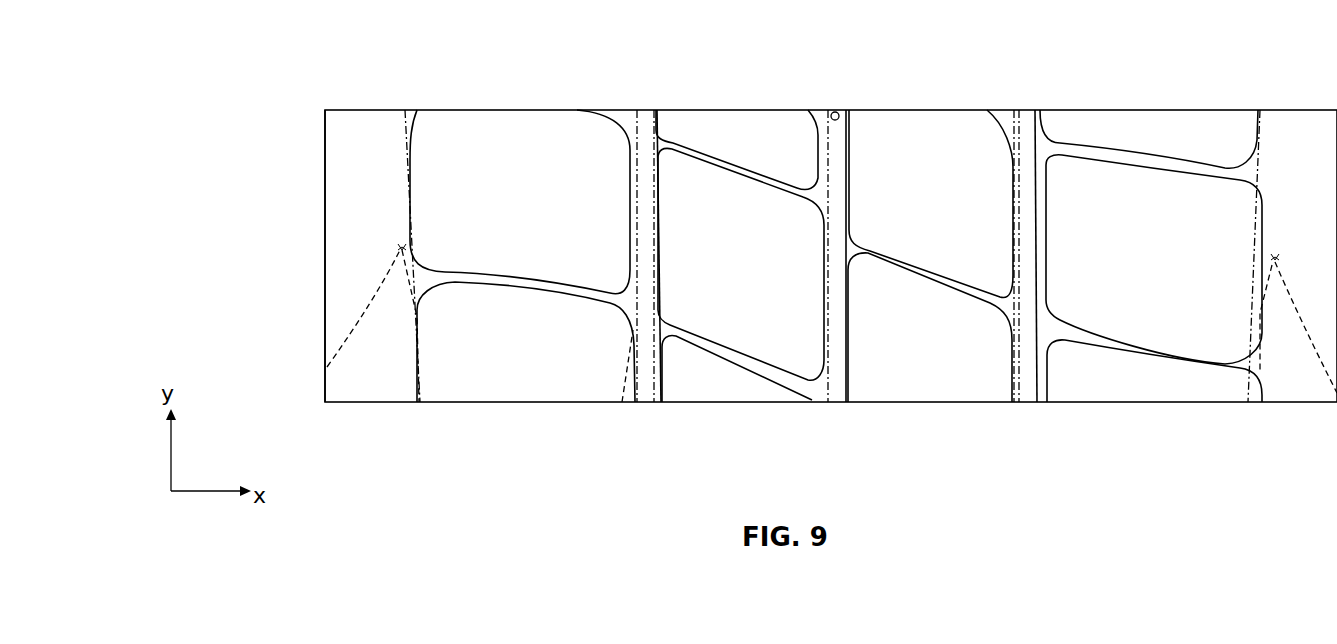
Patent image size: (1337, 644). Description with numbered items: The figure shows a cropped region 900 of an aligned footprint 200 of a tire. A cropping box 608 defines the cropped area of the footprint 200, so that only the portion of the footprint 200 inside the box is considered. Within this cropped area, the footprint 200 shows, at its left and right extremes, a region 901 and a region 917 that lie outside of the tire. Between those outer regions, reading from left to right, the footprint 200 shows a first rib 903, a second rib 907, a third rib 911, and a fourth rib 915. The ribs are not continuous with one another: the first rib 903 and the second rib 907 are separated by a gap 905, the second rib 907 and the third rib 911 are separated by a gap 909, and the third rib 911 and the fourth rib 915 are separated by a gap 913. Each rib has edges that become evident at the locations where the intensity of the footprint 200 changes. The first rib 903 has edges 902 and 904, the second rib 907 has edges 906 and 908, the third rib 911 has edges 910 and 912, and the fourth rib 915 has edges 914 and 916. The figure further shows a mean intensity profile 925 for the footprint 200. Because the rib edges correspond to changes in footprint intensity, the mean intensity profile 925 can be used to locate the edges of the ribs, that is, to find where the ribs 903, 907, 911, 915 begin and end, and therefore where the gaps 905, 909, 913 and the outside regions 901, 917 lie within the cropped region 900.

The cropped region 900 is at (306, 49).
The aligned footprint 200 is at (1188, 118).
The cropping box 608 is at (323, 257).
The region outside of the tire 901 is at (362, 390).
The edge 902 is at (415, 112).
The first rib 903 is at (538, 390).
The edge 904 is at (620, 157).
The gap 905 is at (650, 390).
The edge 906 is at (673, 143).
The second rib 907 is at (737, 392).
The edge 908 is at (816, 125).
The gap 909 is at (832, 390).
The edge 910 is at (853, 143).
The third rib 911 is at (937, 390).
The edge 912 is at (1000, 140).
The gap 913 is at (1033, 390).
The edge 914 is at (1045, 142).
The fourth rib 915 is at (1141, 390).
The edge 916 is at (1258, 118).
The region outside of the tire 917 is at (1297, 390).
The mean intensity profile 925 is at (403, 132).